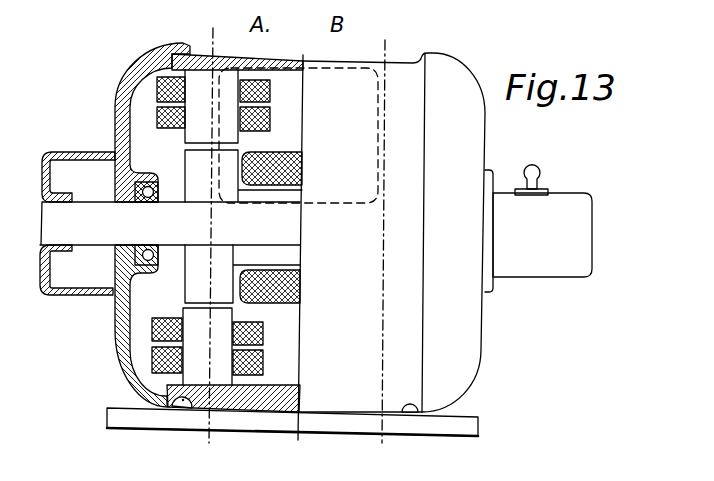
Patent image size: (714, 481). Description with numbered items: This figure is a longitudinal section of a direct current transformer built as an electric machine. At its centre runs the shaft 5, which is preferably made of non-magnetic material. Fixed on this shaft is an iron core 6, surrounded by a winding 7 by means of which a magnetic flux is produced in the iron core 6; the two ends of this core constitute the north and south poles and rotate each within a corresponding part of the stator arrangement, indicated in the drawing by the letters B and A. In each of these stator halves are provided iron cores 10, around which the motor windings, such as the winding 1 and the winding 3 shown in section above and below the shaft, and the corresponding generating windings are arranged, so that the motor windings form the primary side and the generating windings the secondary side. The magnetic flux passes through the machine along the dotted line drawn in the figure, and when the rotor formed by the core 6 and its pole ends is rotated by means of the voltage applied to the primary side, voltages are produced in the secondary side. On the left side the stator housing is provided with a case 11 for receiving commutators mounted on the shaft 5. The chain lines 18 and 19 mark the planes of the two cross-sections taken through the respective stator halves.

The motor winding 1 is at (157, 115).
The motor winding 3 is at (152, 327).
The shaft 5 is at (82, 200).
The iron core 6 is at (280, 257).
The winding 7 is at (300, 166).
The iron cores 10 is at (270, 93).
The case 11 is at (55, 297).
The section line 18— 18 is at (214, 239).
The section line 19— 19 is at (387, 241).